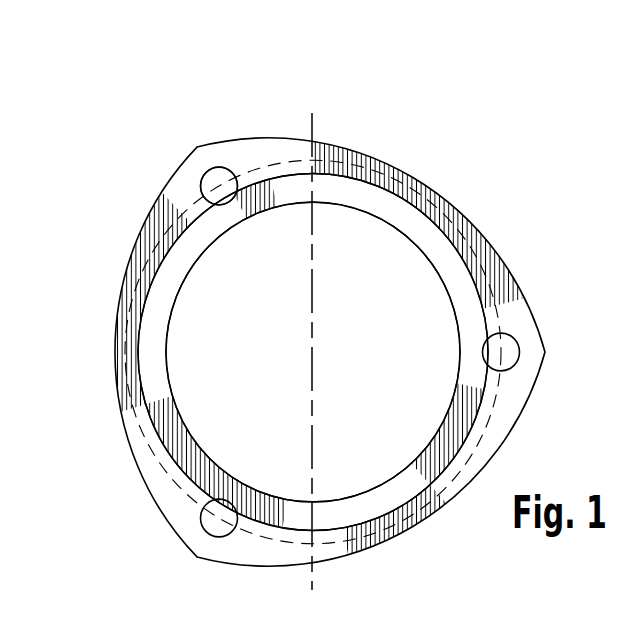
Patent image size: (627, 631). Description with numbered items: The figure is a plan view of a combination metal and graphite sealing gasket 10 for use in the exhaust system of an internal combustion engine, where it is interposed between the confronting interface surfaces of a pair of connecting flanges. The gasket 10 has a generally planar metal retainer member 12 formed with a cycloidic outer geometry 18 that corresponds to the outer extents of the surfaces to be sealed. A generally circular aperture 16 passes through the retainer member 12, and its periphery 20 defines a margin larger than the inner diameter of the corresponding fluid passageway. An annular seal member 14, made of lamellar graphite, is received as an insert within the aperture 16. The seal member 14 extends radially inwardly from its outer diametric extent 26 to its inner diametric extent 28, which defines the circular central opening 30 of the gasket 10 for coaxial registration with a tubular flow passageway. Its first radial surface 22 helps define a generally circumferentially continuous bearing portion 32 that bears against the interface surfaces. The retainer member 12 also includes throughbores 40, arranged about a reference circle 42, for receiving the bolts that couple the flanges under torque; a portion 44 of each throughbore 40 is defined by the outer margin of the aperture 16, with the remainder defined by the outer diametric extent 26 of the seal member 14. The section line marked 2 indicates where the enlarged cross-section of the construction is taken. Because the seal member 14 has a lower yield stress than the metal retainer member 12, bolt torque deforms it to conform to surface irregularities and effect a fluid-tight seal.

The combination metal and graphite sealing gasket 10 is at (328, 317).
The metal retainer member 12 is at (517, 314).
The seal member 14 is at (467, 303).
The aperture 16 is at (440, 248).
The cycloidic outer geometry 18 is at (460, 207).
The periphery of aperture 20 is at (441, 218).
The first radial surface 22 is at (393, 204).
The outer diametric extent of seal member 26 is at (199, 236).
The inner diametric extent of seal member 28 is at (172, 345).
The opening 30 is at (334, 340).
The bearing portion 32 is at (163, 398).
The throughbore 40 is at (196, 177).
The reference circle 42 is at (263, 172).
The portion of throughbore 44 is at (222, 172).
The section line 2- 2 is at (312, 114).